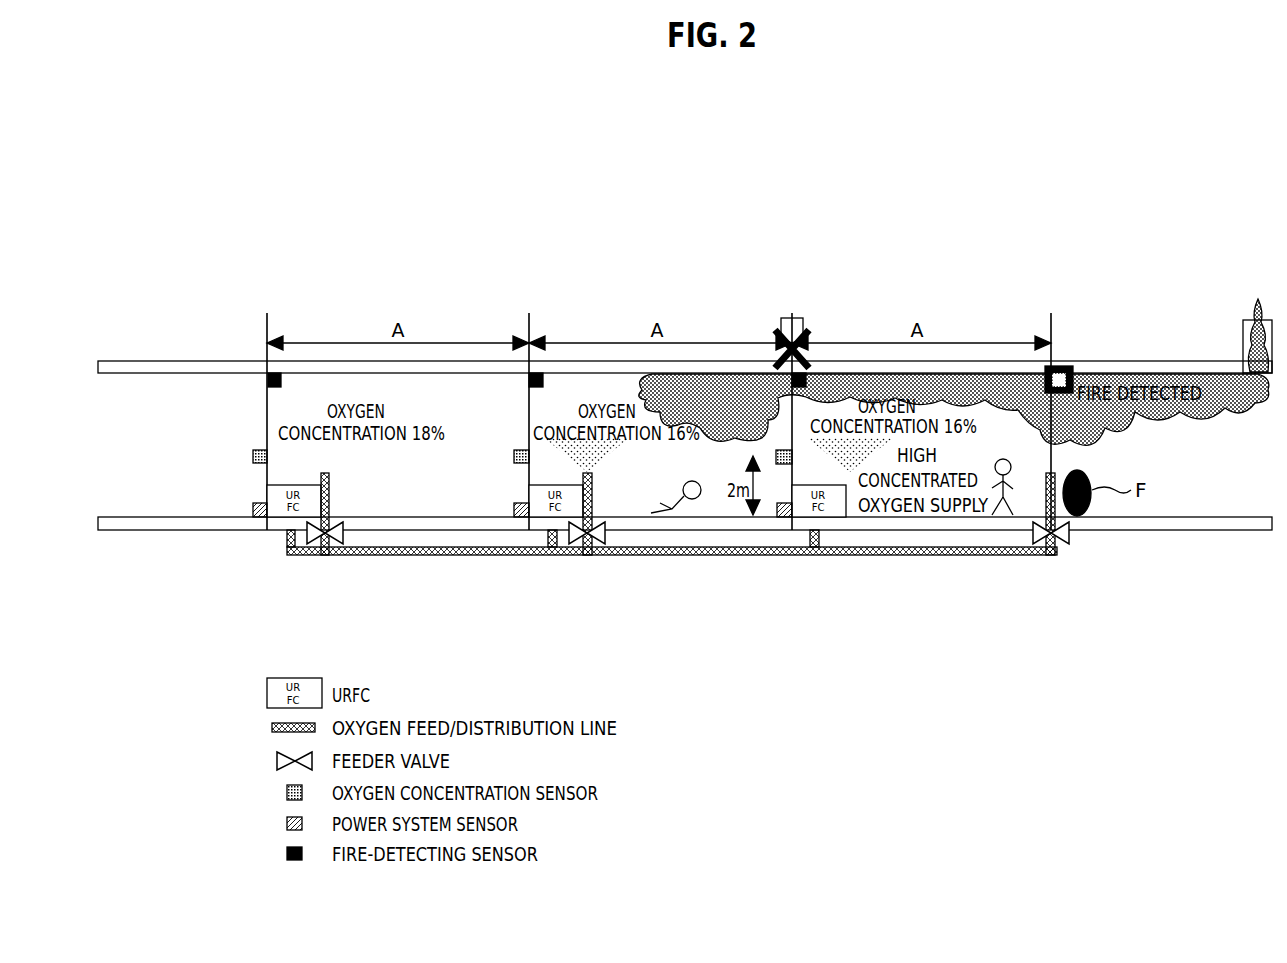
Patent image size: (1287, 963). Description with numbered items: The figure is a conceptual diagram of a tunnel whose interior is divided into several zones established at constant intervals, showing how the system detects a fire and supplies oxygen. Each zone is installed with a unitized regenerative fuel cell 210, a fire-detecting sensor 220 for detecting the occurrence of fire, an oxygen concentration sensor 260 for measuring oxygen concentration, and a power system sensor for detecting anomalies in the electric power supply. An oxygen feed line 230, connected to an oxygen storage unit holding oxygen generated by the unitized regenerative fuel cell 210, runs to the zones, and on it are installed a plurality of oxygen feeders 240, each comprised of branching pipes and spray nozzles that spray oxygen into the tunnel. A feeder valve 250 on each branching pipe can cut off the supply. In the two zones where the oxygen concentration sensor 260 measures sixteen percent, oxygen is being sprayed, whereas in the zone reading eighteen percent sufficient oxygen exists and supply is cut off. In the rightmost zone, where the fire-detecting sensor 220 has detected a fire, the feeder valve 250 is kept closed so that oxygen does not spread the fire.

The unitized regenerative fuel cell 210 is at (529, 493).
The fire-detecting sensor 220 is at (268, 378).
The oxygen feed line 230 is at (655, 556).
The oxygen feeder 240 is at (330, 487).
The feeder valve 250 is at (343, 535).
The oxygen concentration sensor 260 is at (253, 456).